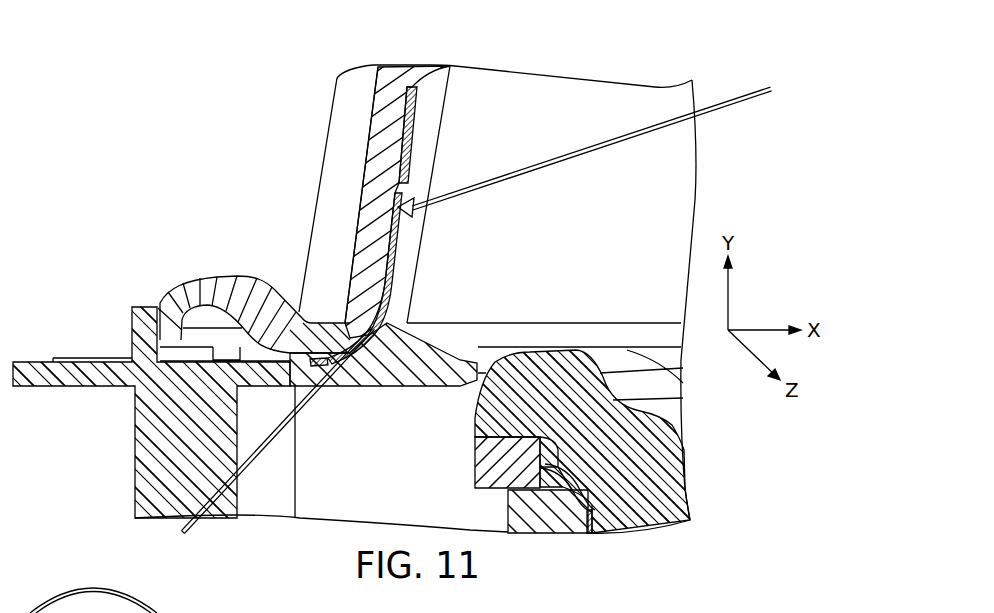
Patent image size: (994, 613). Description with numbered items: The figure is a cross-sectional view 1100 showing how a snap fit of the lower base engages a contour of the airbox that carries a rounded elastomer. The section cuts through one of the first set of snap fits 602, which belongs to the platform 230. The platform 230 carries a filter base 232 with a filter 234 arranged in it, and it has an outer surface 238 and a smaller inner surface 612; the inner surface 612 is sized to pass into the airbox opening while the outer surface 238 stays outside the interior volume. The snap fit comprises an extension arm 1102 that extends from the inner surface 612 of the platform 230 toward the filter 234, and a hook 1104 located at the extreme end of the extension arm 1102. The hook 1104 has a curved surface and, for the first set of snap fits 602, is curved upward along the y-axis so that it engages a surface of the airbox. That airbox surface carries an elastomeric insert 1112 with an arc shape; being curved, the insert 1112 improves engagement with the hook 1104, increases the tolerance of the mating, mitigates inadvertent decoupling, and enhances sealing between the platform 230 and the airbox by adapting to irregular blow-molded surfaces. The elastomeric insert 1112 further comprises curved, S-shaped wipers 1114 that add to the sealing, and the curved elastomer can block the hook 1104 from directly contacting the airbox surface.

The cross-sectional view 1100 is at (708, 90).
The wipers 1114 is at (403, 168).
The elastomeric insert 1112 is at (292, 305).
The outer surface 238 is at (143, 322).
The first set of snap fits 602 is at (462, 358).
The extension arm 1102 is at (270, 382).
The hook 1104 is at (397, 388).
The inner surface 612 is at (168, 520).
The filter 234 is at (657, 437).
The filter base 232 is at (630, 530).
The platform 230 is at (540, 528).